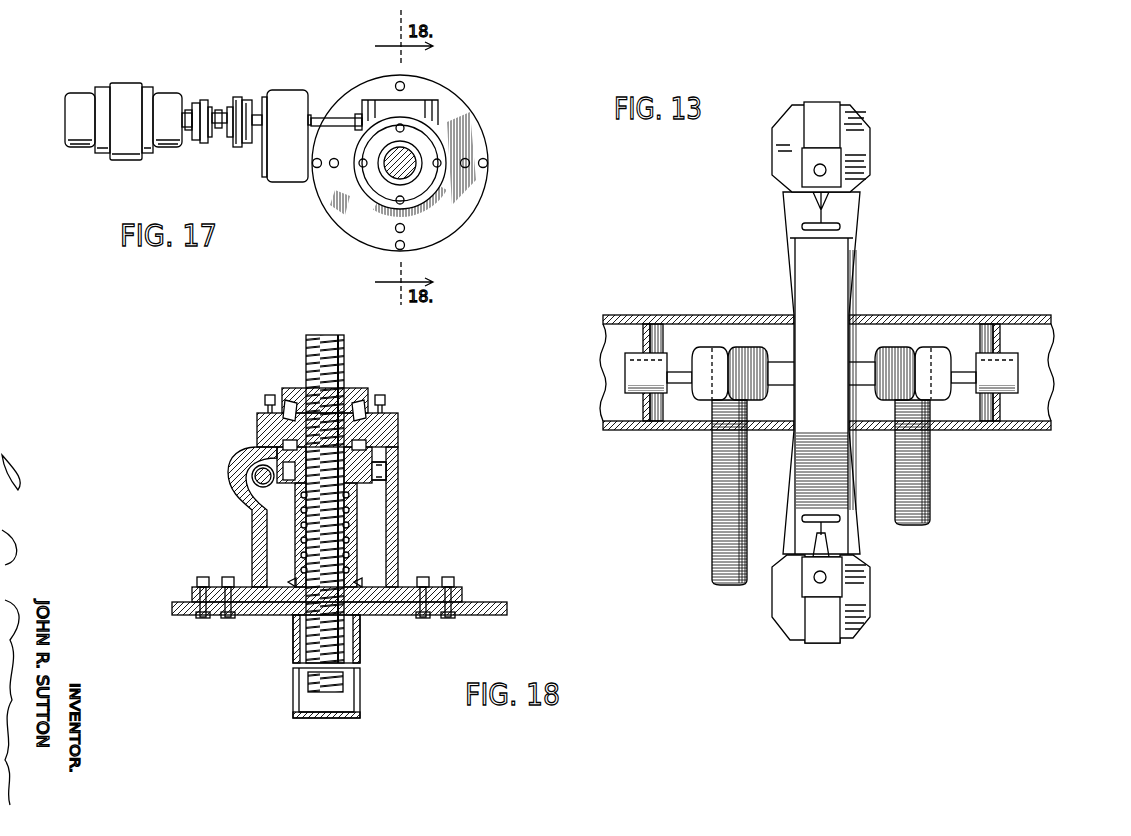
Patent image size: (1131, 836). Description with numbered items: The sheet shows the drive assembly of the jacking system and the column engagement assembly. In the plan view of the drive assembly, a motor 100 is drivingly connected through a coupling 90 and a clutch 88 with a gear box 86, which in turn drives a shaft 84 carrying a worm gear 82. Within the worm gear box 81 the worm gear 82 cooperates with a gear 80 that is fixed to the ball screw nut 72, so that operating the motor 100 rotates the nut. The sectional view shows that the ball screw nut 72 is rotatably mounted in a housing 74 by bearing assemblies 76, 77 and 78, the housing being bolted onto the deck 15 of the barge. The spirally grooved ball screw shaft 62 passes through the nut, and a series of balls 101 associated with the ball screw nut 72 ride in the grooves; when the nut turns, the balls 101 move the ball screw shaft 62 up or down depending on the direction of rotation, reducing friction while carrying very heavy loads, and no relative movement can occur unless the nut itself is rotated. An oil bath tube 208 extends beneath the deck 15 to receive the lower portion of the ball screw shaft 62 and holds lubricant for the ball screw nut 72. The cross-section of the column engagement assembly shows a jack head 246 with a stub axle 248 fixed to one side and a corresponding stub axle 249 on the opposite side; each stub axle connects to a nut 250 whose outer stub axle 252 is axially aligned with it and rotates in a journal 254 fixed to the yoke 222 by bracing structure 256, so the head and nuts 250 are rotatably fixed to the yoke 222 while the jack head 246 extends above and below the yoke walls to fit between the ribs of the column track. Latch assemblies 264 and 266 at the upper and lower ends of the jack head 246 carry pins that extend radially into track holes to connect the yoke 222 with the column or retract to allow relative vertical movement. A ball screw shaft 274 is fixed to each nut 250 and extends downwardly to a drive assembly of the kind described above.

In FIG. 17, the motor 100 is at (125, 97).
In FIG. 17, the coupling 90 is at (198, 100).
In FIG. 17, the clutch 88 is at (240, 97).
In FIG. 17, the gear box 86 is at (283, 95).
In FIG. 17, the shaft 84 is at (337, 120).
In FIG. 17, the worm gear box 81 is at (413, 107).
In FIG. 18, the worm gear box 81 is at (228, 470).
In FIG. 17, the housing 74 is at (433, 202).
In FIG. 18, the housing 74 is at (393, 412).
In FIG. 17, the ball screw nut 72 is at (428, 153).
In FIG. 18, the ball screw nut 72 is at (370, 457).
In FIG. 17, the ball screw shaft 62 is at (383, 153).
In FIG. 18, the ball screw shaft 62 is at (337, 340).
In FIG. 18, the bearing assembly 76 is at (260, 417).
In FIG. 18, the bearing assembly 77 is at (257, 448).
In FIG. 18, the worm gear 82 is at (258, 485).
In FIG. 18, the bearing assembly 78 is at (297, 587).
In FIG. 18, the deck 15 is at (480, 602).
In FIG. 18, the balls 101 is at (355, 560).
In FIG. 18, the gear 80 is at (377, 477).
In FIG. 18, the oil bath tube 208 is at (363, 692).
In FIG. 13, the yoke 222 is at (914, 315).
In FIG. 13, the bracing structure 256 is at (644, 331).
In FIG. 13, the journal 254 is at (637, 371).
In FIG. 13, the nut 250 is at (703, 388).
In FIG. 13, the outer stub axle 252 is at (675, 363).
In FIG. 13, the stub axle 248 is at (776, 365).
In FIG. 13, the pivot shaft 249 is at (860, 369).
In FIG. 13, the jack head 246 is at (828, 279).
In FIG. 13, the latch assembly 264 is at (828, 162).
In FIG. 13, the latch assembly 266 is at (833, 585).
In FIG. 13, the ball screw shaft 274 is at (720, 536).